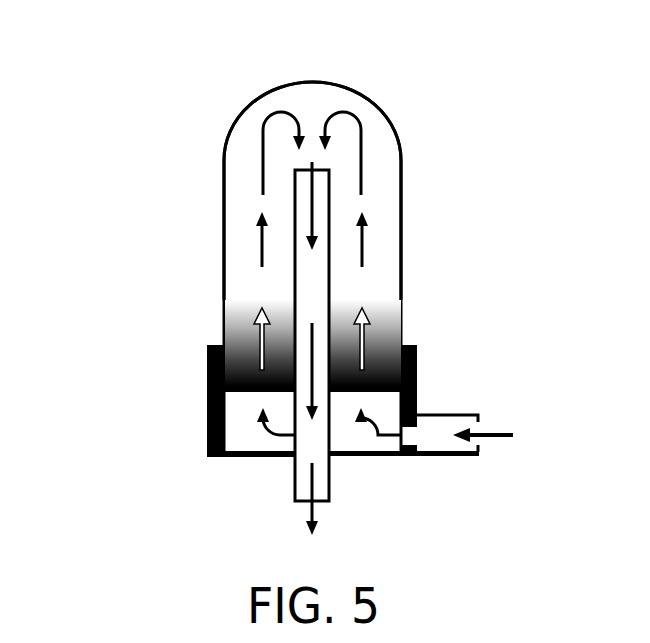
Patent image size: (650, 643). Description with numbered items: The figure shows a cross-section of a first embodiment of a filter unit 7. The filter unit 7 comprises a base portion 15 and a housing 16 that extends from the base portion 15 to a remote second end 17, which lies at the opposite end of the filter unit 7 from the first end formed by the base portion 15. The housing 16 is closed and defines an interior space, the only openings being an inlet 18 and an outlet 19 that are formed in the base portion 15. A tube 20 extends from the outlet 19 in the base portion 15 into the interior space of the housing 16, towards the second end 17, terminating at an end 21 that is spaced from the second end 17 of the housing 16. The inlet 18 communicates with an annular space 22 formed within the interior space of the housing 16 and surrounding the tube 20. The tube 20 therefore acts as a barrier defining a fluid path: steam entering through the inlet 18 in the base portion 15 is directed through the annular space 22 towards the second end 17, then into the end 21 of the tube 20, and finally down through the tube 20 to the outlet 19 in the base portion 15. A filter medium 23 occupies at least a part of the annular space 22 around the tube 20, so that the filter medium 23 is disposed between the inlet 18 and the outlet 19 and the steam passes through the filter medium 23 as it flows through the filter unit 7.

The filter unit 7 is at (100, 97).
The base portion 15 is at (208, 373).
The housing 16 is at (224, 172).
The second end 17 is at (313, 82).
The inlet 18 is at (417, 438).
The outlet 19 is at (318, 502).
The tube 20 is at (328, 258).
The end 21 is at (320, 166).
The annular space 22 is at (275, 295).
The filter medium 23 is at (238, 217).